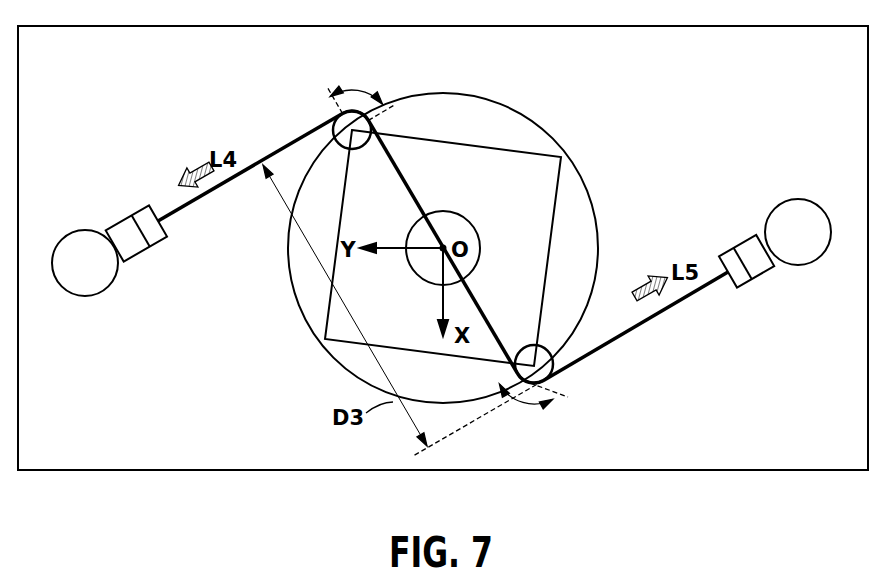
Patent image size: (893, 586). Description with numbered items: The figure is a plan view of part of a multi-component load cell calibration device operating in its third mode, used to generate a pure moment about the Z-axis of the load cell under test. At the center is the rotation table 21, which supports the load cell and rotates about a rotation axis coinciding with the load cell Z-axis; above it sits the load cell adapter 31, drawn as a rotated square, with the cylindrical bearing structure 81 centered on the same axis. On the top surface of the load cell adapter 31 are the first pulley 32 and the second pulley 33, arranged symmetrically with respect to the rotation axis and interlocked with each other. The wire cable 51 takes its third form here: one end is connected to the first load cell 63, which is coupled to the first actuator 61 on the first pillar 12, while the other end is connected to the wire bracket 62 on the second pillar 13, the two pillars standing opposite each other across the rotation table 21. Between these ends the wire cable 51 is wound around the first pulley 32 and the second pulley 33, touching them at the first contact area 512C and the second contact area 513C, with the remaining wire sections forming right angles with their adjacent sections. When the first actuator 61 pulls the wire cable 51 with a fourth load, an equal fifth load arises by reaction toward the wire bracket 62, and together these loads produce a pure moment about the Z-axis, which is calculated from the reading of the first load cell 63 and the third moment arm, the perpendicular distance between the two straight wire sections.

The first pillar 12 is at (86, 238).
The second pillar 13 is at (798, 204).
The rotation table 21 is at (446, 100).
The load cell adapter 31 is at (540, 241).
The first pulley 32 is at (553, 370).
The second pulley 33 is at (329, 122).
The wire cable 51 is at (656, 331).
The first actuator 61 is at (115, 230).
The wire bracket 62 is at (750, 246).
The first load cell 63 is at (147, 214).
The bearing structure 81 is at (443, 212).
The first contact area 512C is at (530, 385).
The second contact area 513C is at (355, 100).